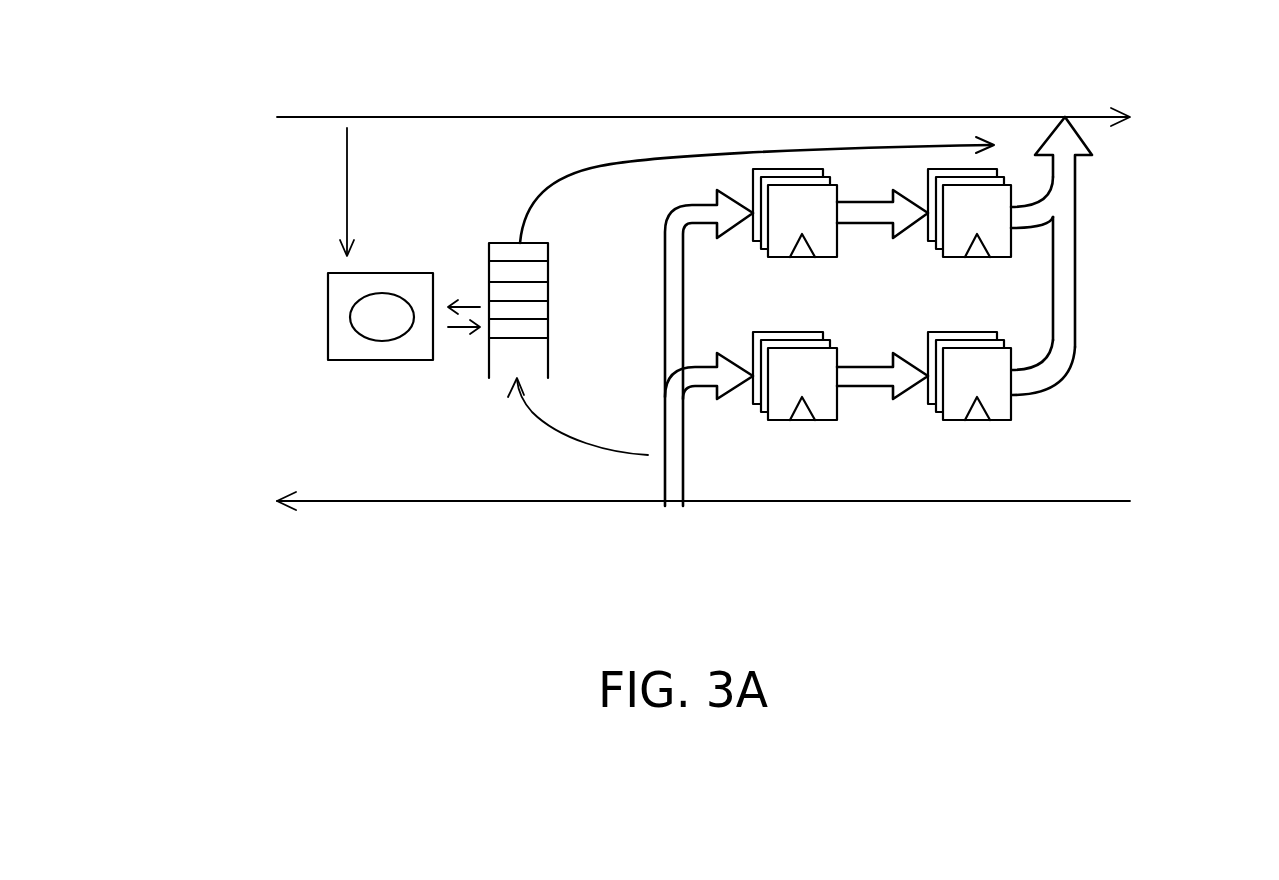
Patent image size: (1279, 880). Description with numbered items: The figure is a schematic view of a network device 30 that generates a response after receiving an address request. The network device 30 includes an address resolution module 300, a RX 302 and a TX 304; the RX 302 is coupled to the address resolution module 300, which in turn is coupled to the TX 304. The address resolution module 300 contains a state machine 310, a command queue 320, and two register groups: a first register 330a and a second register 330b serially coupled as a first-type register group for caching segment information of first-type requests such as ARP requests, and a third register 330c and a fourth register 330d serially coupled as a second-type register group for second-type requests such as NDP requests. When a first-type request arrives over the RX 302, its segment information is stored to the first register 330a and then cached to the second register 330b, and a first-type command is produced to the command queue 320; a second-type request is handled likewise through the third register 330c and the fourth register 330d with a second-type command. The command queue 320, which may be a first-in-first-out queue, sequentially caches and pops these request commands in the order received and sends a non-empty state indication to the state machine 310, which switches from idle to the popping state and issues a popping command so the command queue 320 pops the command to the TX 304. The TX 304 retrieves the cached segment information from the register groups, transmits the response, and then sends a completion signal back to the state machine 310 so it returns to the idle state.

The network device 30 is at (226, 631).
The address resolution module 300 is at (256, 318).
The RX 302 is at (277, 501).
The TX 304 is at (277, 117).
The state machine 310 is at (387, 273).
The command queue 320 is at (502, 243).
The first register 330a is at (828, 420).
The second register 330b is at (1012, 428).
The third register 330c is at (837, 195).
The fourth register 330d is at (960, 170).